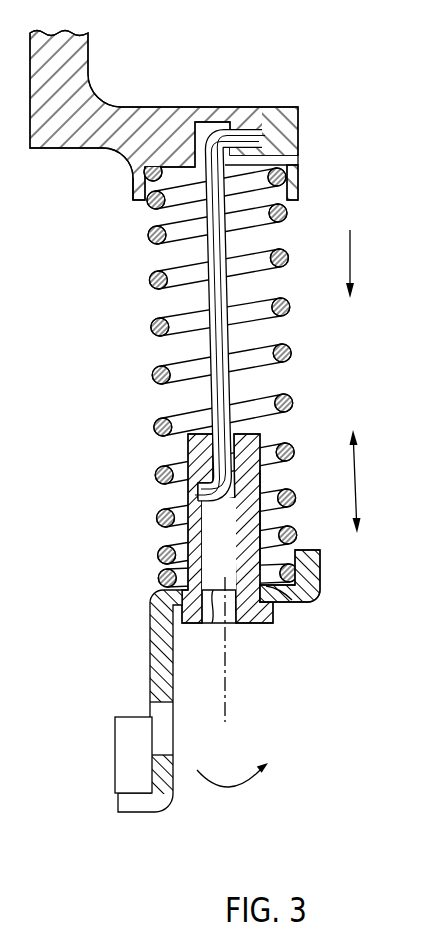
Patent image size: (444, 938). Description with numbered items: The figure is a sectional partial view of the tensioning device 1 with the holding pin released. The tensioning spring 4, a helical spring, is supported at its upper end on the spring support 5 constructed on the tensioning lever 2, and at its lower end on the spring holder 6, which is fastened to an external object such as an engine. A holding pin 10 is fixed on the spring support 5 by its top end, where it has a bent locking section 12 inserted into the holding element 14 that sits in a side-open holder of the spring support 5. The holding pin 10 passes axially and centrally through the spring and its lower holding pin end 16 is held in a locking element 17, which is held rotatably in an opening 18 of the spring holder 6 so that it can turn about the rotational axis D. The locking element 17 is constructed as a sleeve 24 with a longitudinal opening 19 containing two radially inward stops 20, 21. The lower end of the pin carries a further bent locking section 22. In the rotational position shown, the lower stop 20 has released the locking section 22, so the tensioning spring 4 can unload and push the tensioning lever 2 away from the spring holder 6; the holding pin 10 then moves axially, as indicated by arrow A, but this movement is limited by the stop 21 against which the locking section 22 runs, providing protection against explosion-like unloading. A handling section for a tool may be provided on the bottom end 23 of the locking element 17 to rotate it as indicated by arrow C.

The tensioning device 1 is at (350, 148).
The tensioning lever 2 is at (77, 78).
The tensioning spring 4 is at (150, 280).
The spring support 5 is at (137, 187).
The spring holder 6 is at (152, 610).
The holding pin 10 is at (220, 388).
The locking section 12 is at (252, 132).
The holding element 14 is at (299, 131).
The lower holding pin end 16 is at (247, 482).
The locking element 17 is at (266, 520).
The opening 18 is at (282, 602).
The longitudinal opening 19 is at (215, 530).
The lower stop 20 is at (213, 605).
The stop 21 is at (188, 463).
The locking section 22 is at (198, 492).
The bottom end 23 is at (252, 615).
The sleeve 24 is at (245, 448).